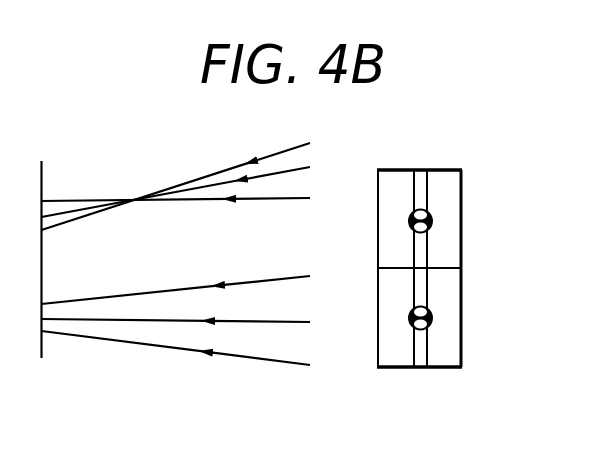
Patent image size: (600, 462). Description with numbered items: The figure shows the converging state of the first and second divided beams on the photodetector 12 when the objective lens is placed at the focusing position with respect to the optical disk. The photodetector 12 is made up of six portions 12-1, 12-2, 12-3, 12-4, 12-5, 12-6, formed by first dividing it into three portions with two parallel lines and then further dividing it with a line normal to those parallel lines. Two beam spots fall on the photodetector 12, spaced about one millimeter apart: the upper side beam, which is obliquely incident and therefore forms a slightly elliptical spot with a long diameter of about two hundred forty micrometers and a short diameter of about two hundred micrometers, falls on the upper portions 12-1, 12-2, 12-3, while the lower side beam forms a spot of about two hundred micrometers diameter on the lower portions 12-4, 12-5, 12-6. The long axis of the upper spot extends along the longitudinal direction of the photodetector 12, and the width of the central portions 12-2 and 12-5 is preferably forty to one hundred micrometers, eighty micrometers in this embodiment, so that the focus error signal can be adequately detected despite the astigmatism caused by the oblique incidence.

The photodetector 12 is at (443, 285).
The portion of photodetector 12-1 is at (388, 172).
The portion of photodetector 12-2 is at (419, 172).
The portion of photodetector 12-3 is at (456, 172).
The portion of photodetector 12-4 is at (387, 368).
The portion of photodetector 12-5 is at (419, 368).
The portion of photodetector 12-6 is at (450, 368).